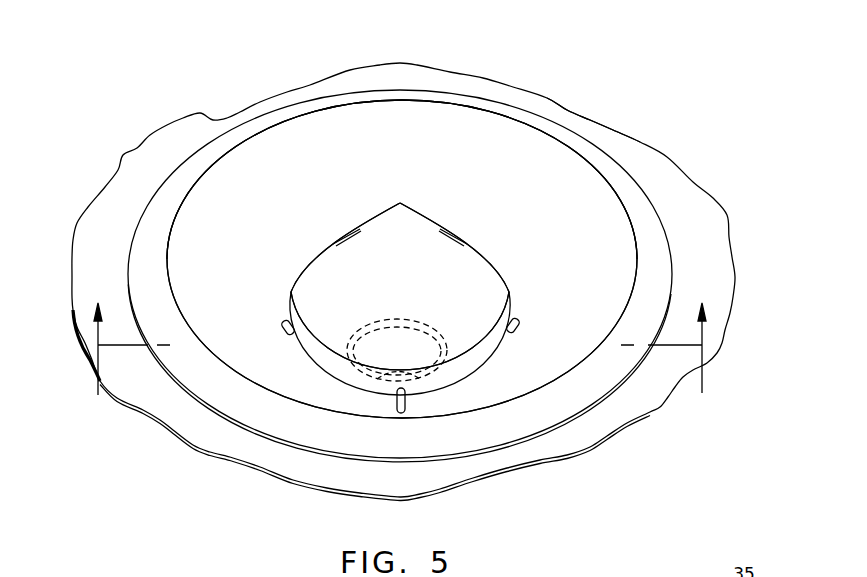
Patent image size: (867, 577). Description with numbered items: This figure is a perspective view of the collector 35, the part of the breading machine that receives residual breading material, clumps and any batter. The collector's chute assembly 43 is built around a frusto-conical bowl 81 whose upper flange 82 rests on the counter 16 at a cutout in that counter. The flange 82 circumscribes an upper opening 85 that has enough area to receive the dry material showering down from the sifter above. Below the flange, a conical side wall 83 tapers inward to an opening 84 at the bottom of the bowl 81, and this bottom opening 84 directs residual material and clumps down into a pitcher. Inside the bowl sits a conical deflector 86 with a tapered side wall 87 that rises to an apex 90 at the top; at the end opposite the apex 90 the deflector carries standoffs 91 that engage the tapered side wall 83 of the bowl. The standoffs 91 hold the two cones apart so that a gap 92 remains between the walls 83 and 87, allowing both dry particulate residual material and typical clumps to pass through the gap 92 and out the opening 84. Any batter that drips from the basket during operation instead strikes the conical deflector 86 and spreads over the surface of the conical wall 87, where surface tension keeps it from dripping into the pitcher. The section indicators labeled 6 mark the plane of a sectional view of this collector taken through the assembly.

The section line 6- 6 is at (400, 363).
The counter 16 is at (675, 188).
The collector 35 is at (587, 95).
The chute assembly 43 is at (288, 161).
The frusto-conical bowl 81 is at (624, 160).
The upper flange 82 is at (643, 378).
The conical side wall 83 is at (497, 183).
The opening 84 is at (418, 380).
The upper opening 85 is at (403, 143).
The conical deflector 86 is at (325, 360).
The tapered side wall 87 is at (318, 275).
The apex 90 is at (400, 200).
The standoffs 91 is at (284, 330).
The gap 92 is at (487, 360).